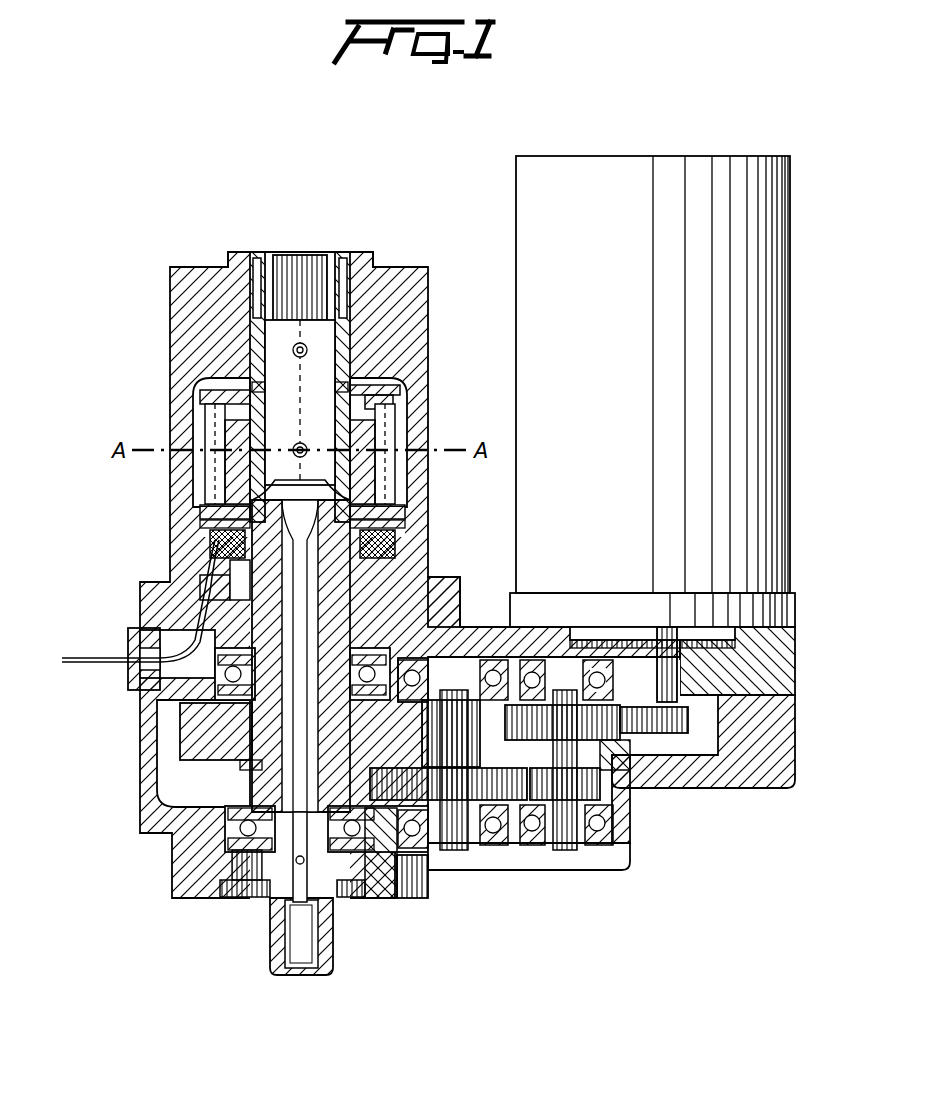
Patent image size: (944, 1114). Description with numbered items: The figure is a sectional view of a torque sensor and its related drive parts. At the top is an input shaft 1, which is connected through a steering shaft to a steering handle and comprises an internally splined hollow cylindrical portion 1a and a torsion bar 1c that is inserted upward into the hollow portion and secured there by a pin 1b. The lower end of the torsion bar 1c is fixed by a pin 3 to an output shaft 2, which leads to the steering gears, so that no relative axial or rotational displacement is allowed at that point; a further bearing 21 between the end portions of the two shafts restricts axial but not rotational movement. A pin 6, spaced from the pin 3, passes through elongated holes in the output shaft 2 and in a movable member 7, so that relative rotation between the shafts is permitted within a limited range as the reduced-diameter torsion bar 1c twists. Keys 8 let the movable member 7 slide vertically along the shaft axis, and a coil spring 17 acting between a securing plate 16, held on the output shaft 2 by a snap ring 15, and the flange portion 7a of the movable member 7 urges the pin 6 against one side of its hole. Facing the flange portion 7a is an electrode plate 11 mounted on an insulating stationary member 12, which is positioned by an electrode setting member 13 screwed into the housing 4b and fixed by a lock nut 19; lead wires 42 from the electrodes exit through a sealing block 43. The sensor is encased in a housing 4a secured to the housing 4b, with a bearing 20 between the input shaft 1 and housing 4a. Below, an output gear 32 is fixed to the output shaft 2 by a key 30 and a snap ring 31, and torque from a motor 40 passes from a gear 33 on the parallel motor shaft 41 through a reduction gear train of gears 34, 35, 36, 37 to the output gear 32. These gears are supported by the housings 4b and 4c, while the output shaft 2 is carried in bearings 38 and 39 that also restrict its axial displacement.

The input shaft 1 is at (268, 250).
The hollow cylindrical portion 1a is at (338, 252).
The pin 1b is at (318, 345).
The torsion bar 1c is at (330, 365).
The output shaft 2 is at (275, 968).
The pin 3 is at (295, 872).
The housing 4a is at (200, 580).
The housing 4b is at (790, 680).
The housing 4c is at (790, 740).
The pin 6 is at (220, 398).
The movable member 7 is at (225, 428).
The flange portion 7a is at (390, 511).
The keys 8 is at (240, 465).
The electrode plate 11 is at (215, 522).
The stationary member 12 is at (215, 540).
The electrode setting member 13 is at (218, 580).
The snap ring 15 is at (262, 388).
The securing plate 16 is at (258, 395).
The coil spring 17 is at (385, 404).
The lock nut 19 is at (435, 592).
The bearing 20 is at (350, 270).
The bearing 21 is at (355, 385).
The key 30 is at (400, 870).
The snap ring 31 is at (262, 838).
The output gear 32 is at (432, 838).
The gear 33 is at (705, 735).
The gear 34 is at (605, 745).
The gear 35 is at (612, 860).
The gear 36 is at (452, 820).
The gear 37 is at (532, 855).
The bearing 38 is at (230, 745).
The bearing 39 is at (348, 855).
The motor 40 is at (790, 228).
The motor shaft 41 is at (690, 672).
The lead wires 42 is at (95, 662).
The sealing block 43 is at (215, 685).